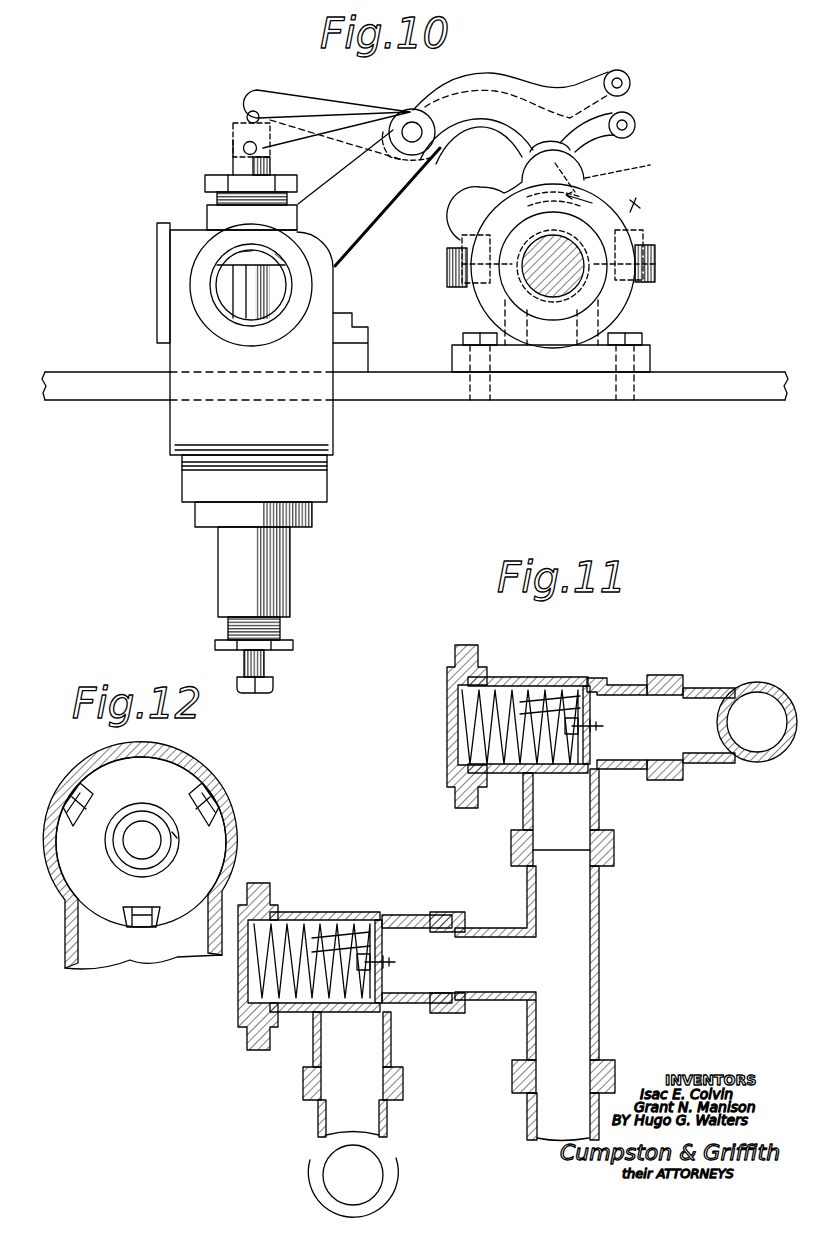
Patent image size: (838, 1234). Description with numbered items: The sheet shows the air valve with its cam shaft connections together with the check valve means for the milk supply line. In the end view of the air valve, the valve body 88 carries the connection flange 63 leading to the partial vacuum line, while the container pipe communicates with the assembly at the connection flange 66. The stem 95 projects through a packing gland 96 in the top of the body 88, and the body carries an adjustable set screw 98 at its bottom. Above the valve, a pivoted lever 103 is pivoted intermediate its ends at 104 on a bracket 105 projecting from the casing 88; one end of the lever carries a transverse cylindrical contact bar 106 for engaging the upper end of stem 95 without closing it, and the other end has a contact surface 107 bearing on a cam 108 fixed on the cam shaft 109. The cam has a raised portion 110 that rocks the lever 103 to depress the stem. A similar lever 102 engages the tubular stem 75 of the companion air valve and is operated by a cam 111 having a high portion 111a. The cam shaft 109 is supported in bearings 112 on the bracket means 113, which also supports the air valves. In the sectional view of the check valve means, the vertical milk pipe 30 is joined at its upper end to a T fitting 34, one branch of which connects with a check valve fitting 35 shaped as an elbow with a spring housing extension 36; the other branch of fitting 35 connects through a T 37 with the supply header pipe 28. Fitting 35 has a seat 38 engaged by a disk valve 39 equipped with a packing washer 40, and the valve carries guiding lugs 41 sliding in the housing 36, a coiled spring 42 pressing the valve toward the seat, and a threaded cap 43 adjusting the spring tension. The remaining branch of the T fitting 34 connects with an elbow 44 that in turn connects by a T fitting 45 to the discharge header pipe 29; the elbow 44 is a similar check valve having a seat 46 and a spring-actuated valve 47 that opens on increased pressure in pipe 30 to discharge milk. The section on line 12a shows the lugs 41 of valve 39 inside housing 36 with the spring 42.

In FIG. 10, the connection flange 63 is at (257, 336).
In FIG. 10, the connection flange 66 is at (157, 240).
In FIG. 10, the tubular stem 75 is at (234, 128).
In FIG. 10, the body portion 88 is at (183, 320).
In FIG. 10, the stem 95 is at (237, 171).
In FIG. 10, the packing gland 96 is at (288, 228).
In FIG. 10, the adjustable set screw 98 is at (268, 668).
In FIG. 10, the pivoted lever 102 is at (298, 95).
In FIG. 10, the pivoted lever 103 is at (364, 105).
In FIG. 10, the pivot 104 is at (413, 136).
In FIG. 10, the bracket 105 is at (367, 227).
In FIG. 10, the transverse cylindrical contact bar 106 is at (243, 148).
In FIG. 10, the contact surface 107 is at (578, 150).
In FIG. 10, the cam 108 is at (637, 205).
In FIG. 10, the cam shaft 109 is at (548, 285).
In FIG. 10, the raised portion 110 is at (522, 158).
In FIG. 10, the cam 111 is at (632, 178).
In FIG. 10, the high portion 111a is at (462, 212).
In FIG. 10, the bearings 112 is at (657, 262).
In FIG. 10, the bracket means 113 is at (693, 370).
In FIG. 11, the section line 12a is at (552, 845).
In FIG. 11, the header pipe 28 is at (752, 708).
In FIG. 11, the header pipe 29 is at (330, 1172).
In FIG. 11, the pipe 30 is at (528, 1105).
In FIG. 11, the T fitting 34 is at (597, 922).
In FIG. 11, the check valve fitting 35 is at (604, 816).
In FIG. 12, the check valve fitting 35 is at (72, 940).
In FIG. 11, the spring housing extension 36 is at (505, 677).
In FIG. 12, the spring housing extension 36 is at (228, 799).
In FIG. 11, the T 37 is at (700, 687).
In FIG. 11, the seat 38 is at (597, 768).
In FIG. 11, the disk valve 39 is at (583, 684).
In FIG. 12, the disk valve 39 is at (212, 846).
In FIG. 11, the packing washer 40 is at (605, 683).
In FIG. 12, the guiding lugs 41 is at (84, 790).
In FIG. 11, the coiled spring 42 is at (468, 701).
In FIG. 12, the coiled spring 42 is at (170, 856).
In FIG. 11, the cap 43 is at (450, 795).
In FIG. 11, the elbow 44 is at (410, 918).
In FIG. 11, the T fitting 45 is at (322, 1108).
In FIG. 11, the seat 46 is at (385, 993).
In FIG. 11, the spring-actuated valve 47 is at (360, 918).